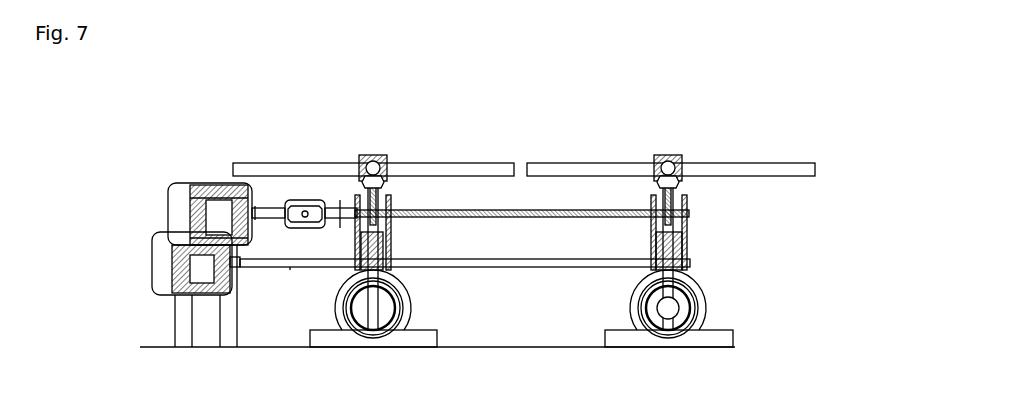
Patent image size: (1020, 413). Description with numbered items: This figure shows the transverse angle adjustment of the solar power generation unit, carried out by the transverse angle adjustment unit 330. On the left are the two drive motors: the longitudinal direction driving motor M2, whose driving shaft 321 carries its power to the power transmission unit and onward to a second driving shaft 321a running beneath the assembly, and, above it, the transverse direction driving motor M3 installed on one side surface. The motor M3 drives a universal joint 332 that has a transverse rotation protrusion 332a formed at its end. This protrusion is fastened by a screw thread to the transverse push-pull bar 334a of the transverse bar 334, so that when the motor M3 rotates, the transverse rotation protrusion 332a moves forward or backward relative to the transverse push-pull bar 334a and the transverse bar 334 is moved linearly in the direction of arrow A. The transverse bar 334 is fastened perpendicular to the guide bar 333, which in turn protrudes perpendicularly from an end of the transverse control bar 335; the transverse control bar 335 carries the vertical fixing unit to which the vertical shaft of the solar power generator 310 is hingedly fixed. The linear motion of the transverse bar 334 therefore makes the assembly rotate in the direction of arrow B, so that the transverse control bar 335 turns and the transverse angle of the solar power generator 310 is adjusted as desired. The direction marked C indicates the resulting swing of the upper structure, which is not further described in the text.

The solar power generator 310 is at (410, 162).
The driving shaft 321 is at (290, 268).
The second driving shaft 321a is at (512, 268).
The transverse angle adjustment unit 330 is at (267, 185).
The universal joint 332 is at (313, 200).
The transverse rotation protrusion 332a is at (338, 200).
The guide bar 333 is at (690, 227).
The transverse bar 334 is at (495, 218).
The transverse push-pull bar 334a is at (335, 240).
The transverse control bar 335 is at (385, 303).
The longitudinal direction driving motor M2 is at (150, 235).
The transverse direction driving motor M3 is at (190, 182).
The arrow A is at (626, 207).
The arrow B is at (667, 308).
The direction C is at (810, 150).